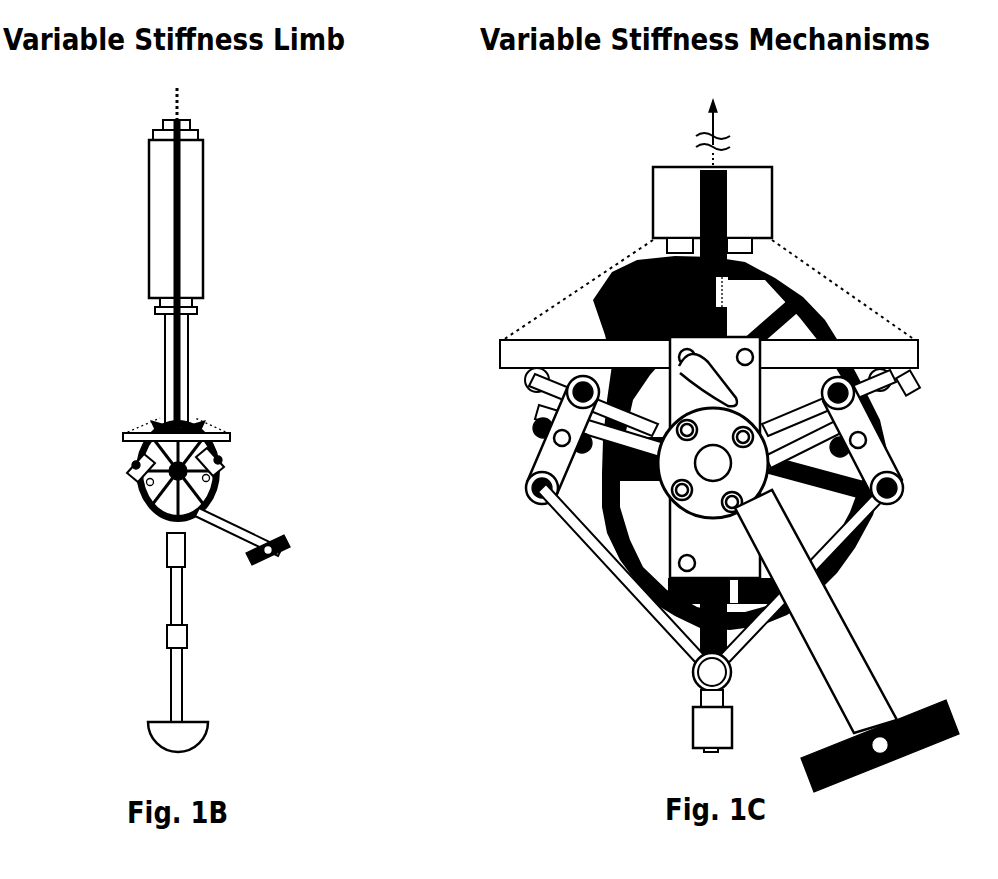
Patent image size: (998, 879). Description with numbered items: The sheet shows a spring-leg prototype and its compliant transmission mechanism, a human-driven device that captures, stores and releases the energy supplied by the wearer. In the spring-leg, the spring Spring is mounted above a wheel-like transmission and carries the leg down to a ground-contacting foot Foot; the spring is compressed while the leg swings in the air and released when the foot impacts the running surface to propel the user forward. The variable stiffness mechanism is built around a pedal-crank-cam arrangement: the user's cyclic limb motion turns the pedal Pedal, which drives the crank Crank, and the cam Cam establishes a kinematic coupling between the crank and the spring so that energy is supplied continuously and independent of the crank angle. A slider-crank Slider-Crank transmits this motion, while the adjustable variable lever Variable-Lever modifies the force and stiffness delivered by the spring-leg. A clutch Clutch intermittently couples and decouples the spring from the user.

In FIG. 1B, the spring Spring is at (118, 217).
In FIG. 1B, the foot Foot is at (225, 734).
In FIG. 1C, the variable lever Variable-Lever is at (487, 436).
In FIG. 1C, the slider-crank Slider-Crank is at (625, 618).
In FIG. 1C, the cam Cam is at (862, 436).
In FIG. 1C, the clutch Clutch is at (778, 420).
In FIG. 1C, the crank Crank is at (839, 611).
In FIG. 1C, the pedal Pedal is at (899, 757).